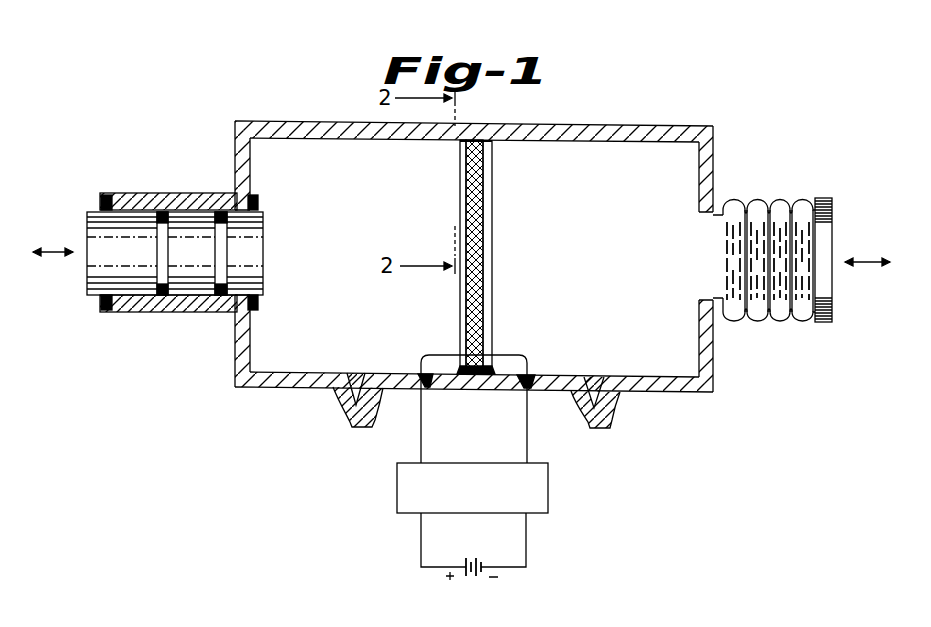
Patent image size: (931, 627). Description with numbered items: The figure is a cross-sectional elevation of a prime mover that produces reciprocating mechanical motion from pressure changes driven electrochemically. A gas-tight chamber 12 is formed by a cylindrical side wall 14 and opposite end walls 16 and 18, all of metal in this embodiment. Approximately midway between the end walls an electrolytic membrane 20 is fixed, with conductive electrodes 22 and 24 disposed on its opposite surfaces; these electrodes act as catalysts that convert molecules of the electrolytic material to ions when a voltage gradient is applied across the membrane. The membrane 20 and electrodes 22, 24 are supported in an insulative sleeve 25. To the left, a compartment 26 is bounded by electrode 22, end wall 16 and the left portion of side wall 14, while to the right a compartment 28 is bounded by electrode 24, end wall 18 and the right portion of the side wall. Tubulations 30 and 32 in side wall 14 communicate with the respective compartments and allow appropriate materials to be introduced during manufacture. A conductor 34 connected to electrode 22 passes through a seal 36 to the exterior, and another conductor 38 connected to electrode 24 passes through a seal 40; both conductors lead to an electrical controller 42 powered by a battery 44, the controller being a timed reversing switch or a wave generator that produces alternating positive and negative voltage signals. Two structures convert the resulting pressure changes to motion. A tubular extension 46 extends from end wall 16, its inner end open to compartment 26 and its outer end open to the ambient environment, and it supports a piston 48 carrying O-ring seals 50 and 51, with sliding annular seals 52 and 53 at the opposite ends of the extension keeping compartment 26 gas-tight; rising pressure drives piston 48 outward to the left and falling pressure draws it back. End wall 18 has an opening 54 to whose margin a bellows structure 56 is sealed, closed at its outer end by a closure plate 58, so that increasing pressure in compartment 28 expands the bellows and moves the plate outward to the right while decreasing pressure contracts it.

The gas-tight chamber 12 is at (472, 233).
The side wall 14 is at (568, 124).
The end wall 16 is at (236, 130).
The end wall 18 is at (713, 160).
The electrolytic membrane 20 is at (476, 257).
The conductive electrode 22 is at (460, 160).
The conductive electrode 24 is at (485, 213).
The insulative sleeve 25 is at (492, 143).
The compartment 26 is at (340, 301).
The compartment 28 is at (589, 283).
The tubulation 30 is at (341, 400).
The tubulation 32 is at (600, 405).
The conductor 34 is at (440, 356).
The seal 36 is at (437, 388).
The conductor 38 is at (513, 356).
The seal 40 is at (535, 391).
The electrical controller 42 is at (548, 492).
The battery 44 is at (482, 578).
The tubular extension 46 is at (185, 312).
The piston 48 is at (258, 238).
The O-ring seal 50 is at (162, 211).
The O-ring seal 51 is at (220, 211).
The sliding annular seal 52 is at (103, 200).
The sliding annular seal 53 is at (259, 201).
The opening 54 is at (700, 287).
The bellows structure 56 is at (780, 323).
The closure plate 58 is at (832, 318).